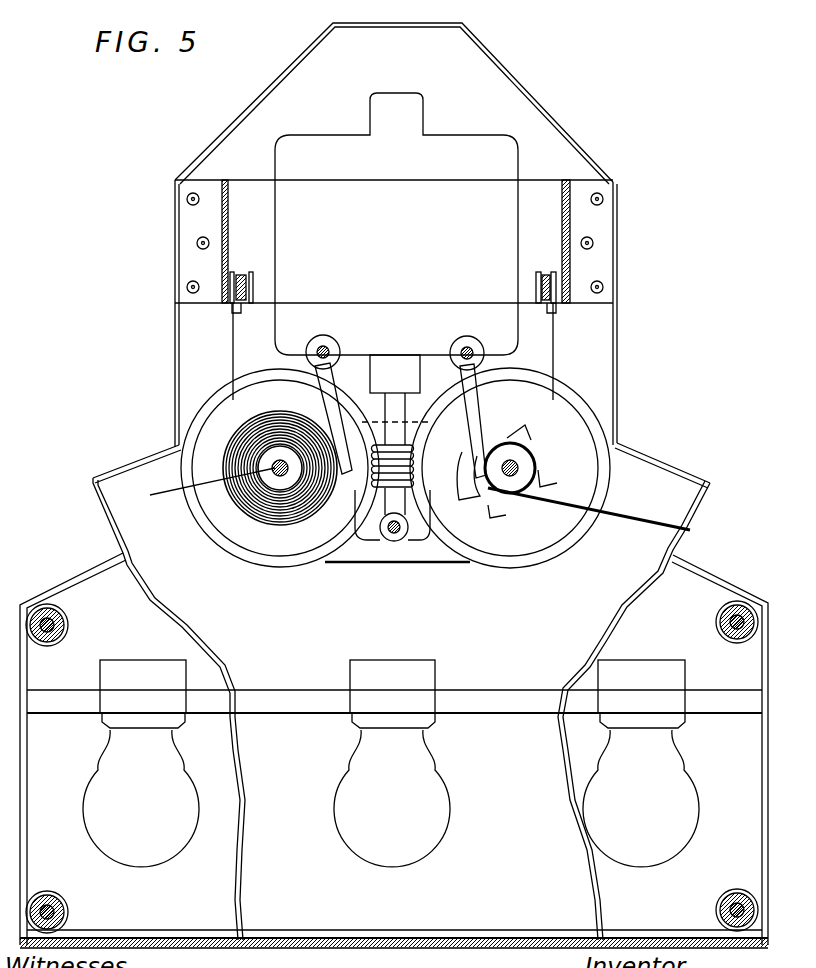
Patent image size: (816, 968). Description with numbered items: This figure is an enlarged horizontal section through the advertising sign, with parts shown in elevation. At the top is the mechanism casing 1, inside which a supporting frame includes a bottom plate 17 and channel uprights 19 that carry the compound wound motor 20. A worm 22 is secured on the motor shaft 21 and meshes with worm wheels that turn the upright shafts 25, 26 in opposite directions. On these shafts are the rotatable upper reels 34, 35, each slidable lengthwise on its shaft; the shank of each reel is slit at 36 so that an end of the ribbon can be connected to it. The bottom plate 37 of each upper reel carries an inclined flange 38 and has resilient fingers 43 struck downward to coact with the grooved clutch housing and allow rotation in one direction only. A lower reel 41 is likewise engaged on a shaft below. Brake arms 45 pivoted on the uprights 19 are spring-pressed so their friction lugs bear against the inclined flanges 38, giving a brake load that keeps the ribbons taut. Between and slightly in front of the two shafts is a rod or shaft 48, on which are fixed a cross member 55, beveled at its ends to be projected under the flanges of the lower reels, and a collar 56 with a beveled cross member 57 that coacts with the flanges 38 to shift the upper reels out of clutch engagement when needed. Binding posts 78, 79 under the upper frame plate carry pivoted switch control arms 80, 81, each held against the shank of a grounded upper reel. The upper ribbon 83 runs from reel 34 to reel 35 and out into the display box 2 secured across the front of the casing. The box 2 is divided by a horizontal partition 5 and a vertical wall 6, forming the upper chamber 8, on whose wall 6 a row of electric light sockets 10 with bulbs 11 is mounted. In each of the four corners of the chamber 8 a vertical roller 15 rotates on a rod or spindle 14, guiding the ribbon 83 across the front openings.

The mechanism casing 1 is at (176, 342).
The display box 2 is at (80, 580).
The horizontal partition 5 is at (394, 750).
The vertical partition wall 6 is at (485, 694).
The upper chamber 8 is at (762, 775).
The electric light socket 10 is at (392, 694).
The electric light bulb 11 is at (391, 798).
The rod or spindle 14 is at (52, 630).
The vertical roller 15 is at (68, 624).
The bottom plate 17 is at (396, 235).
The channel upright 19 is at (222, 210).
The compound wound motor 20 is at (396, 224).
The motor shaft 21 is at (408, 410).
The worm 22 is at (414, 456).
The upright shaft 25 is at (281, 472).
The upright shaft 26 is at (517, 466).
The upper reel 34 is at (185, 486).
The upper reel 35 is at (527, 440).
The slit 36 is at (520, 492).
The bottom plate 37 is at (578, 484).
The inclined flange 38 is at (212, 522).
The lower reel 41 is at (241, 272).
The resilient lug or finger 43 is at (472, 500).
The brake arm 45 is at (233, 351).
The rod or shaft 48 is at (400, 540).
The cross member 55 is at (380, 442).
The collar 56 is at (392, 541).
The beveled cross member 57 is at (365, 548).
The binding post 78 is at (332, 343).
The binding post 79 is at (462, 342).
The switch control arm 80 is at (325, 400).
The switch control arm 81 is at (480, 412).
The upper ribbon 83 is at (152, 930).